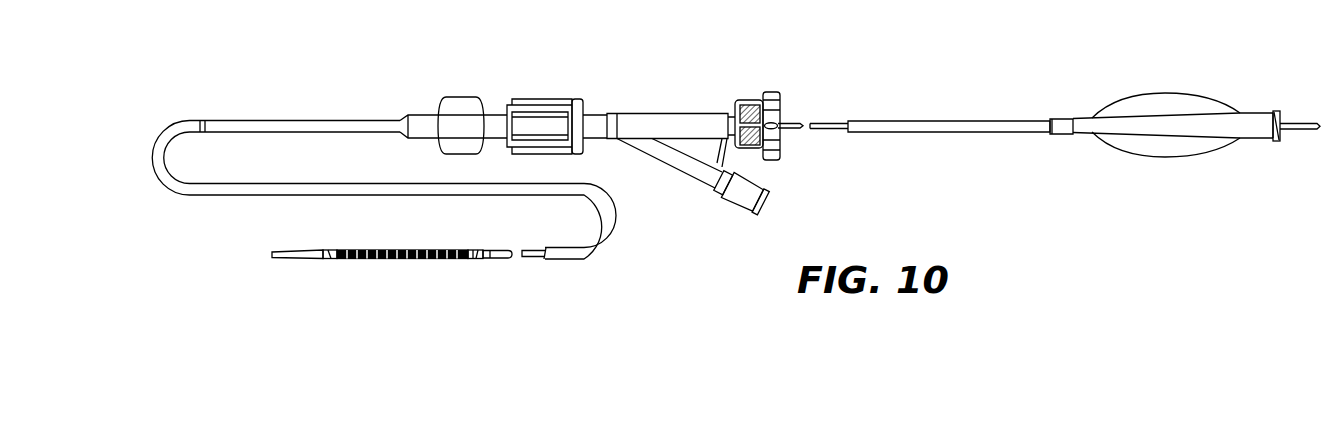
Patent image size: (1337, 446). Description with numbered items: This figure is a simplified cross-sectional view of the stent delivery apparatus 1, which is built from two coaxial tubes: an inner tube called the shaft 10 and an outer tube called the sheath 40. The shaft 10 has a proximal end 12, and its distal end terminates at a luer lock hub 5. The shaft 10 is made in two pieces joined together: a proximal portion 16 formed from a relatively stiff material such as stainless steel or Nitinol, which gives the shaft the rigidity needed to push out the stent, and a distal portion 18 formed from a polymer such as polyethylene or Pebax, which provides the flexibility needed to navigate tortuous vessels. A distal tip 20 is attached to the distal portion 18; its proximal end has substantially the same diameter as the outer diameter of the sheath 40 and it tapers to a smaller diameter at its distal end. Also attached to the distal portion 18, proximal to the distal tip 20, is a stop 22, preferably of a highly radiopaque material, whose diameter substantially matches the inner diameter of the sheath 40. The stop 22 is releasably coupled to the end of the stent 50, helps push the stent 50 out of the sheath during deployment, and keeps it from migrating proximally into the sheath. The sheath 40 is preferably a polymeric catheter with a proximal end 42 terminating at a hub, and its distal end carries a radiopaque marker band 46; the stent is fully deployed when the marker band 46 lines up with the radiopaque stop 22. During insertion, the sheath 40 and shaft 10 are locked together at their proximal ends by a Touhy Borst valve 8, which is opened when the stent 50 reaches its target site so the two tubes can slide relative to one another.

The delivery apparatus 1 is at (524, 311).
The luer lock hub 5 is at (1167, 93).
The Touhy Borst valve 8 is at (768, 92).
The shaft 10 is at (533, 262).
The proximal end 12 is at (847, 132).
The proximal portion 16 is at (827, 122).
The distal portion 18 is at (502, 262).
The distal tip 20 is at (273, 260).
The stop 22 is at (470, 262).
The sheath 40 is at (157, 183).
The proximal end 42 is at (199, 120).
The radiopaque marker band 46 is at (325, 260).
The stent 50 is at (393, 259).